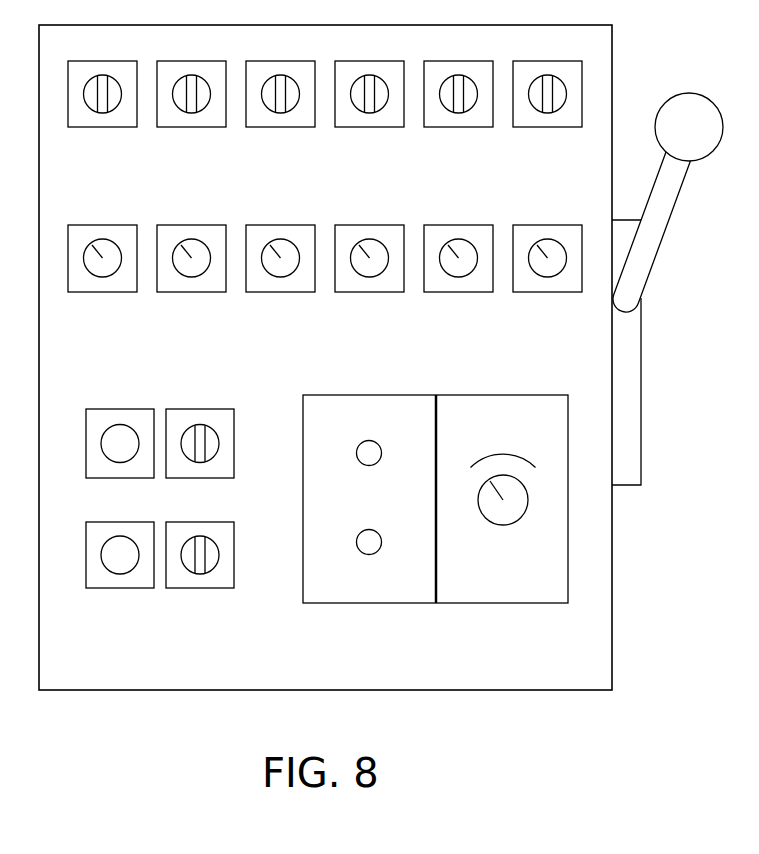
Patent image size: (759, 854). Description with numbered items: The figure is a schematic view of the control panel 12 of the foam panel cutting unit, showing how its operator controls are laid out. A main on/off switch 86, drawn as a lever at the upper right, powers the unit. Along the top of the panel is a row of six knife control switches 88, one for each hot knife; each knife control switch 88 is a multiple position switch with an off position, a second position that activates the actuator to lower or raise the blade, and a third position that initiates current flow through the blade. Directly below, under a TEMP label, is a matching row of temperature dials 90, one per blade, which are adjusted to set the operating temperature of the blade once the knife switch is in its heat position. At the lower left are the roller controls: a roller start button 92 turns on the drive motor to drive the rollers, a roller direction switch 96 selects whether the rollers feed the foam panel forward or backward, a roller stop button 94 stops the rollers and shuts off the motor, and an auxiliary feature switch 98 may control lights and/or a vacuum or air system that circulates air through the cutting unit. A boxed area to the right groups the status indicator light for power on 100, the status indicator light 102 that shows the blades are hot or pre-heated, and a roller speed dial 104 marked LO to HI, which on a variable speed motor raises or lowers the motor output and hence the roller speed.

The control panel 12 is at (612, 638).
The main on/off switch 86 is at (678, 198).
The knife control switch 88 is at (107, 127).
The temperature dial 90 is at (107, 292).
The roller start button 92 is at (119, 409).
The roller stop button 94 is at (120, 588).
The roller direction switch 96 is at (199, 409).
The auxiliary feature switch 98 is at (200, 588).
The status indicator light for power on 100 is at (369, 466).
The status indicator light for blade temperature 102 is at (369, 554).
The roller speed dial 104 is at (505, 525).